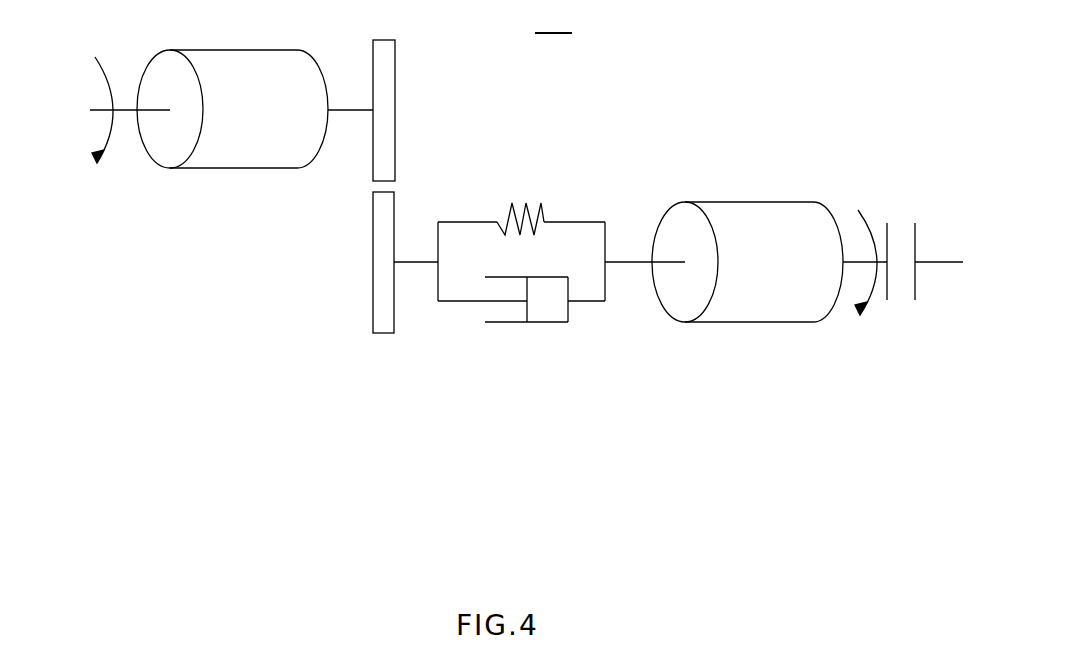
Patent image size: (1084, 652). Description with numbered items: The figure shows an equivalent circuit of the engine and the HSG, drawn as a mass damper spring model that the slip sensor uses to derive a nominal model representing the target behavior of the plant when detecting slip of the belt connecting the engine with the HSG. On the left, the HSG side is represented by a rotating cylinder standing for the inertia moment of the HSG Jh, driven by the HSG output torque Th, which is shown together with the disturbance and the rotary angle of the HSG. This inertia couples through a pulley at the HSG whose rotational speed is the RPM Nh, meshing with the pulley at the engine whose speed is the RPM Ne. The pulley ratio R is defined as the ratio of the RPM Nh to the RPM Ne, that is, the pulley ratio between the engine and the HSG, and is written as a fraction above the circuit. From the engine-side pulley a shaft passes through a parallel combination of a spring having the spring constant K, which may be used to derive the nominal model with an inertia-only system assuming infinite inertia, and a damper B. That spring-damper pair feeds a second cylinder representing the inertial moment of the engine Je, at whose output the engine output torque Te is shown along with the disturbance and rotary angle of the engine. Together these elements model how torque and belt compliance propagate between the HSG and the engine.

The HSG output torque Th is at (103, 91).
The inertia moment of the HSG Jh is at (255, 109).
The RPM of the pulley at the HSG Nh is at (385, 95).
The RPM of the pulley at the engine Ne is at (405, 277).
The spring constant K is at (521, 238).
The damper B is at (521, 312).
The inertial moment of the engine Je is at (724, 262).
The engine output torque Te is at (882, 243).
The pulley ratio R is at (531, 36).